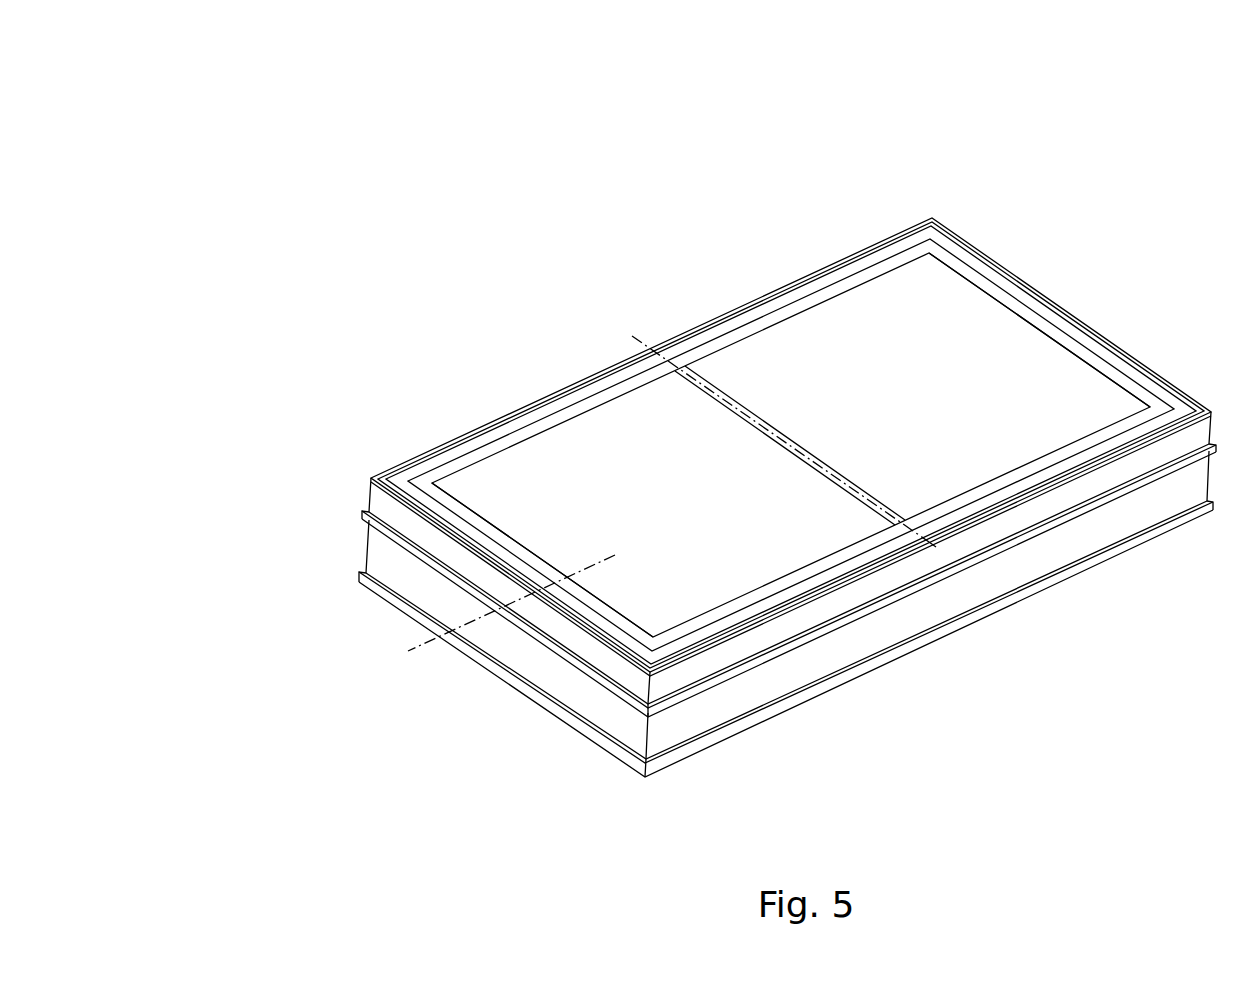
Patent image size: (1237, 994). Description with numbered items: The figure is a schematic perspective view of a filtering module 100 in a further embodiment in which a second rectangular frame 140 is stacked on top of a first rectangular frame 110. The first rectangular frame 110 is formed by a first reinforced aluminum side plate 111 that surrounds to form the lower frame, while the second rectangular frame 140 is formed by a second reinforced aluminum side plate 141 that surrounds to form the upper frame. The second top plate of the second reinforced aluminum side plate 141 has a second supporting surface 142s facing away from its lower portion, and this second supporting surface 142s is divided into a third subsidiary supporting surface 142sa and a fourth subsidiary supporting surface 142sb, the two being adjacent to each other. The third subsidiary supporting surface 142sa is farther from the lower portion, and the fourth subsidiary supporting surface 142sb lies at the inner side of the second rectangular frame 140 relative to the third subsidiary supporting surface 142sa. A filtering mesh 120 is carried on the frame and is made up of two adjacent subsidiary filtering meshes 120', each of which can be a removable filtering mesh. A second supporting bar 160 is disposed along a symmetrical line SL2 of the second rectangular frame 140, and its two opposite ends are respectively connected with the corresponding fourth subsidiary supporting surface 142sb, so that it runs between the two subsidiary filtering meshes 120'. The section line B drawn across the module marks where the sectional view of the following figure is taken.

The filtering module 100 is at (234, 49).
The first rectangular frame 110 is at (585, 710).
The first reinforced aluminum side plate 111 is at (837, 663).
The filtering mesh 120 is at (791, 414).
The subsidiary filtering mesh 120' is at (726, 385).
The second rectangular frame 140 is at (372, 503).
The second reinforced aluminum side plate 141 is at (863, 592).
The second supporting surface 142s is at (503, 246).
The third subsidiary supporting surface 142sa is at (420, 467).
The fourth subsidiary supporting surface 142sb is at (492, 452).
The second supporting bar 160 is at (838, 474).
The symmetrical line SL2 is at (940, 547).
The section line B- B is at (603, 577).